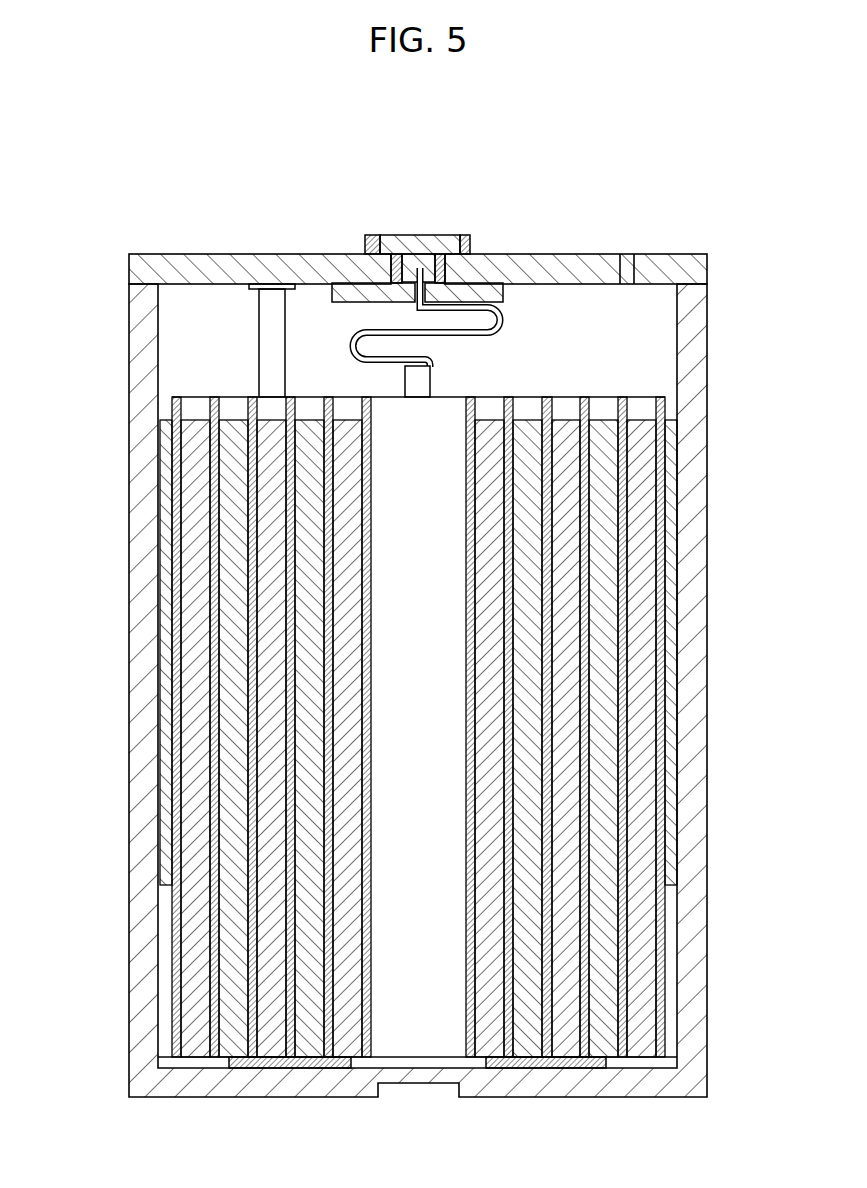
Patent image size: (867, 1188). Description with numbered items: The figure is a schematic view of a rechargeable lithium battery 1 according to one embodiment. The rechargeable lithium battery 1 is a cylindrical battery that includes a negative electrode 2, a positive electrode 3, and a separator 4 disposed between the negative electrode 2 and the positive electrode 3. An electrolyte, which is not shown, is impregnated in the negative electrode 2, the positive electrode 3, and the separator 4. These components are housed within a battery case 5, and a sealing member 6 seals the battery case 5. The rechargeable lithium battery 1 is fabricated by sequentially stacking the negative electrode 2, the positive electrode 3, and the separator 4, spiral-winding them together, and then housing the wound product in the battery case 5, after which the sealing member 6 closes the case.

The rechargeable lithium battery 1 is at (609, 184).
The negative electrode 2 is at (638, 928).
The positive electrode 3 is at (235, 955).
The separator 4 is at (213, 1010).
The battery case 5 is at (142, 396).
The sealing member 6 is at (372, 236).